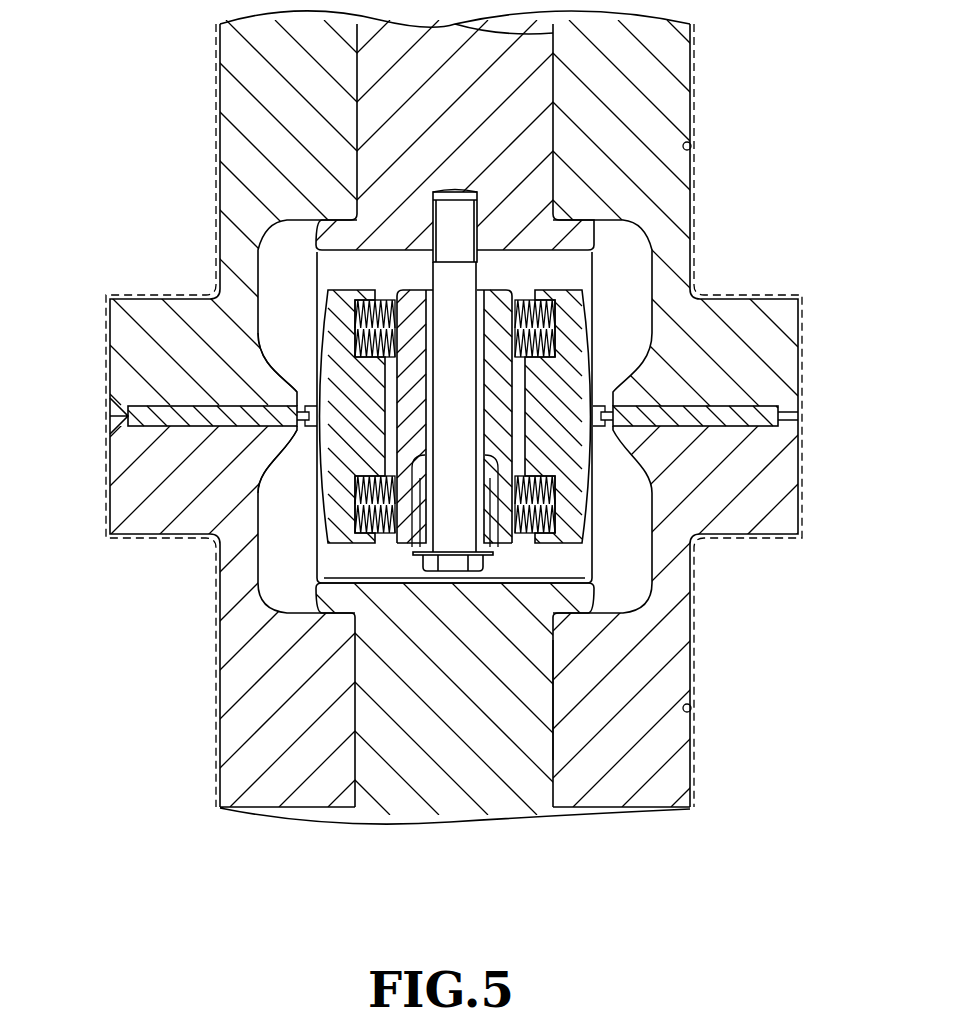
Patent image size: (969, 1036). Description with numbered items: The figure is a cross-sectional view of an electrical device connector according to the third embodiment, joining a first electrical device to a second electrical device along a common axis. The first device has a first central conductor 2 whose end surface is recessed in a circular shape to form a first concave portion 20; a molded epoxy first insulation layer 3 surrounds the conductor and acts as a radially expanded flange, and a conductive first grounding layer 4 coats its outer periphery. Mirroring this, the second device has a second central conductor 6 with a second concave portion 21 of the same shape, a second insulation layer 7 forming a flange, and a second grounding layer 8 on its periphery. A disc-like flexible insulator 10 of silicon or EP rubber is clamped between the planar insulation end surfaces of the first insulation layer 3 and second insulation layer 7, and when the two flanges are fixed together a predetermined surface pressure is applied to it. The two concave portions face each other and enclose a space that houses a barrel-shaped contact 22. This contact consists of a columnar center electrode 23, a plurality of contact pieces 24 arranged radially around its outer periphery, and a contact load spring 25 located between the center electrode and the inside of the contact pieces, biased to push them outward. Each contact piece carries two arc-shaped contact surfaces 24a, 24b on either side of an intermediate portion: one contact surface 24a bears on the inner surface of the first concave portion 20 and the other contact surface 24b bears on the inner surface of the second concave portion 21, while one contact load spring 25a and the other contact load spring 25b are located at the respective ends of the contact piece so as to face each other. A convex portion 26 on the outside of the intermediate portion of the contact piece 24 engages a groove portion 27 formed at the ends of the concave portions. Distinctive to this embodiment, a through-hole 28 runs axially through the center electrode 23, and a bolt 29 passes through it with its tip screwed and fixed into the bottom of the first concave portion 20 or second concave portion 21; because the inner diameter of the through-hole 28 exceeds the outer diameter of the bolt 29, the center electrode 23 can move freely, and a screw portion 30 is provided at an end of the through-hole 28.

The first central conductor 2 is at (553, 98).
The first insulation layer 3 is at (691, 146).
The first grounding layer 4 is at (691, 186).
The second central conductor 6 is at (556, 681).
The second insulation layer 7 is at (691, 708).
The second grounding layer 8 is at (691, 739).
The flexible insulator 10 is at (757, 397).
The first concave portion 20 is at (578, 288).
The second concave portion 21 is at (600, 591).
The barrel-shaped contact 22 is at (580, 290).
The center electrode 23 is at (407, 290).
The contact pieces 24 is at (42, 360).
The contact surface 24a is at (300, 368).
The contact surface 24b is at (313, 458).
The contact load spring 25 is at (527, 289).
The contact load spring 25a is at (385, 300).
The contact load spring 25b is at (383, 538).
The convex portion 26 is at (612, 408).
The groove portion 27 is at (610, 432).
The through-hole 28 is at (410, 548).
The bolt 29 is at (458, 572).
The screw portion 30 is at (497, 548).